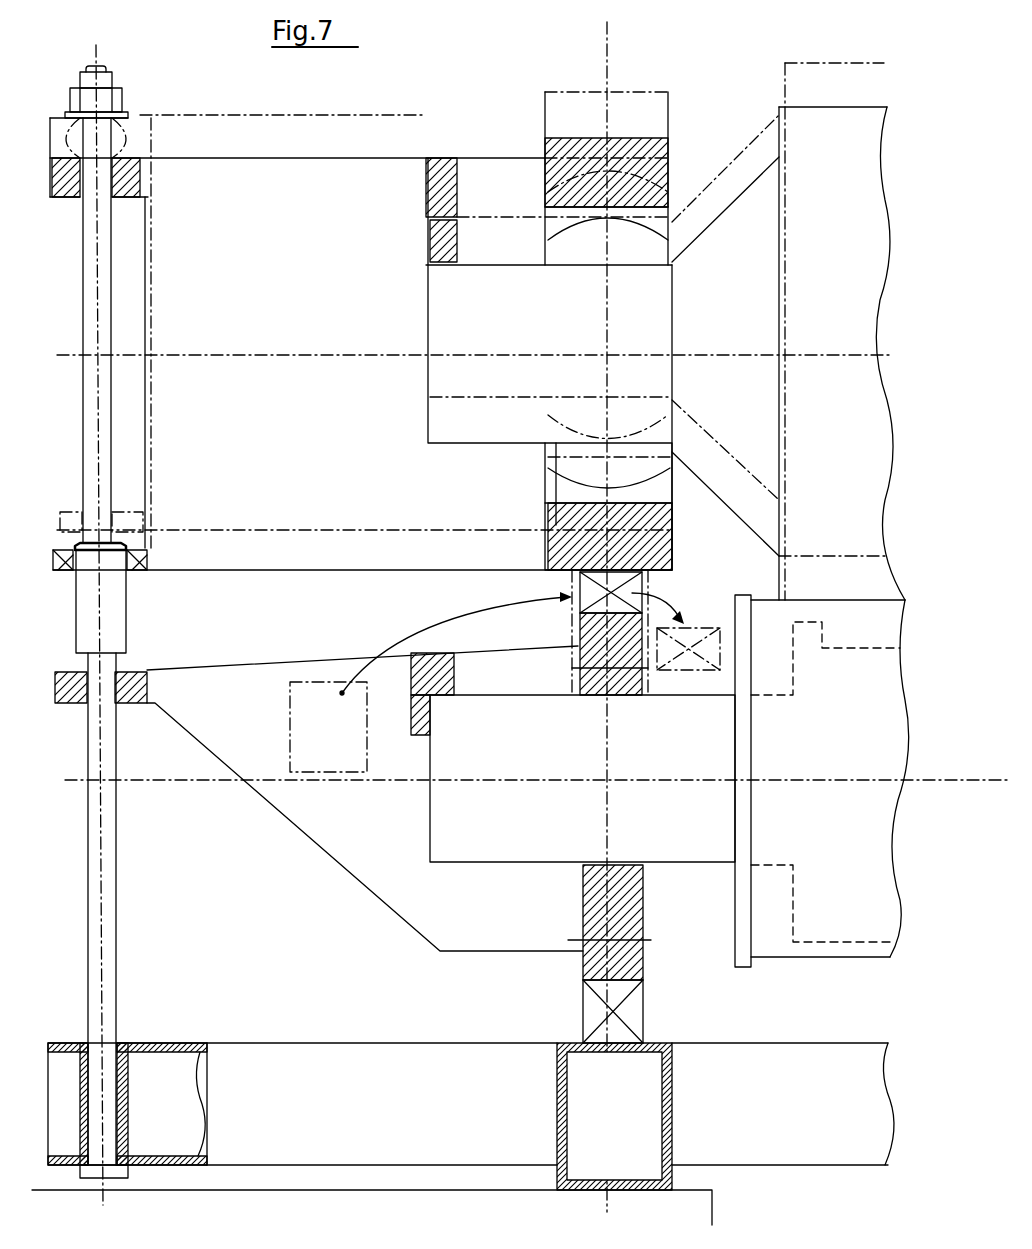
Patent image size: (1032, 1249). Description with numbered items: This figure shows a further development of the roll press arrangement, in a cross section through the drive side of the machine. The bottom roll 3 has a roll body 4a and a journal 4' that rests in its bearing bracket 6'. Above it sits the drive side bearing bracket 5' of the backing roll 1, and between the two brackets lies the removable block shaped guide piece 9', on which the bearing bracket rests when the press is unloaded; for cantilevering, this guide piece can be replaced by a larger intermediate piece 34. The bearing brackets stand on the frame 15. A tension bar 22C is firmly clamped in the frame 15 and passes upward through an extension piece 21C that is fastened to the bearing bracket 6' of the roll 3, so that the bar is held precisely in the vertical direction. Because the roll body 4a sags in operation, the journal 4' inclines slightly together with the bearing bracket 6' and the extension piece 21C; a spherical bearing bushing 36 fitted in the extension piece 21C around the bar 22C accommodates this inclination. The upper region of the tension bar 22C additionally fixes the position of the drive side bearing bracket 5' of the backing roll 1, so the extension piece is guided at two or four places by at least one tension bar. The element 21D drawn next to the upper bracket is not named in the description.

The backing roll 1 is at (766, 58).
The roll 3 is at (728, 952).
The journal 4' is at (573, 744).
The roll body 4a is at (848, 933).
The drive side bearing bracket 5' is at (593, 173).
The bearing bracket 6' is at (578, 954).
The guide piece 9' is at (684, 623).
The frame 15 is at (326, 1055).
The extension piece 21C is at (368, 857).
The upper lever arm 21D is at (308, 553).
The tension bar 22C is at (110, 850).
The intermediate piece 34 is at (288, 700).
The spherical bearing bushing 36 is at (122, 703).